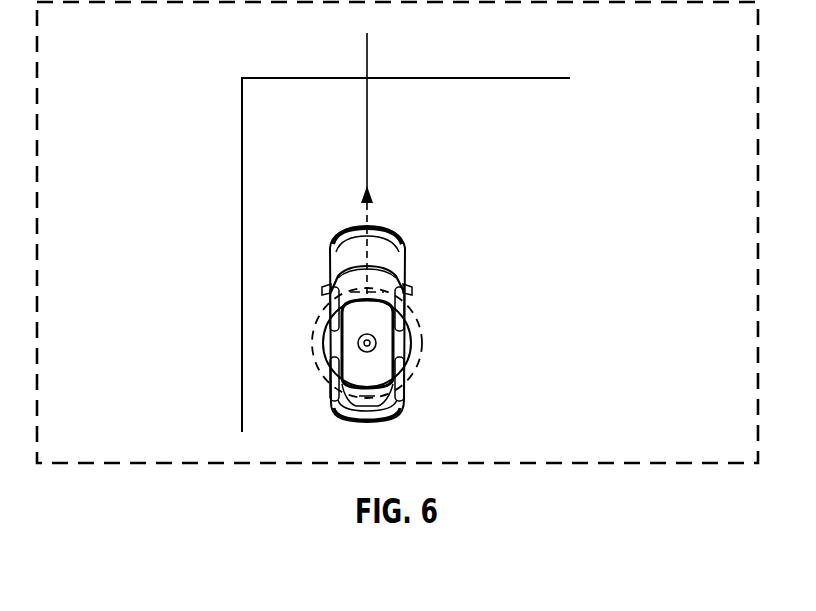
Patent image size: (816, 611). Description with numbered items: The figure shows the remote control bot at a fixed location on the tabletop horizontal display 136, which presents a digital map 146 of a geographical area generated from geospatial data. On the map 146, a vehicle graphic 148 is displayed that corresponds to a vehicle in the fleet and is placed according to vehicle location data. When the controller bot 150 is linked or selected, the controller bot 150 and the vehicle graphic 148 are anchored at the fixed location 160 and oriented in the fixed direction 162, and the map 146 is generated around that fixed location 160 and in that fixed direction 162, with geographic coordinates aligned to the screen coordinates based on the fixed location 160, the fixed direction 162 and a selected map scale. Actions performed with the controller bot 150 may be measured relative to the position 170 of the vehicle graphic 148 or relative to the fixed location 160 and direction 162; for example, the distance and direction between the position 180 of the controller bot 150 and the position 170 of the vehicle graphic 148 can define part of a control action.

The horizontal display 136 is at (724, 52).
The map 146 is at (215, 75).
The vehicle graphic 148 is at (404, 398).
The controller bot 150 is at (410, 362).
The fixed location 160 is at (410, 308).
The fixed direction 162 is at (367, 253).
The position of the vehicle graphic 170 is at (336, 344).
The position of the controller bot 180 is at (342, 343).